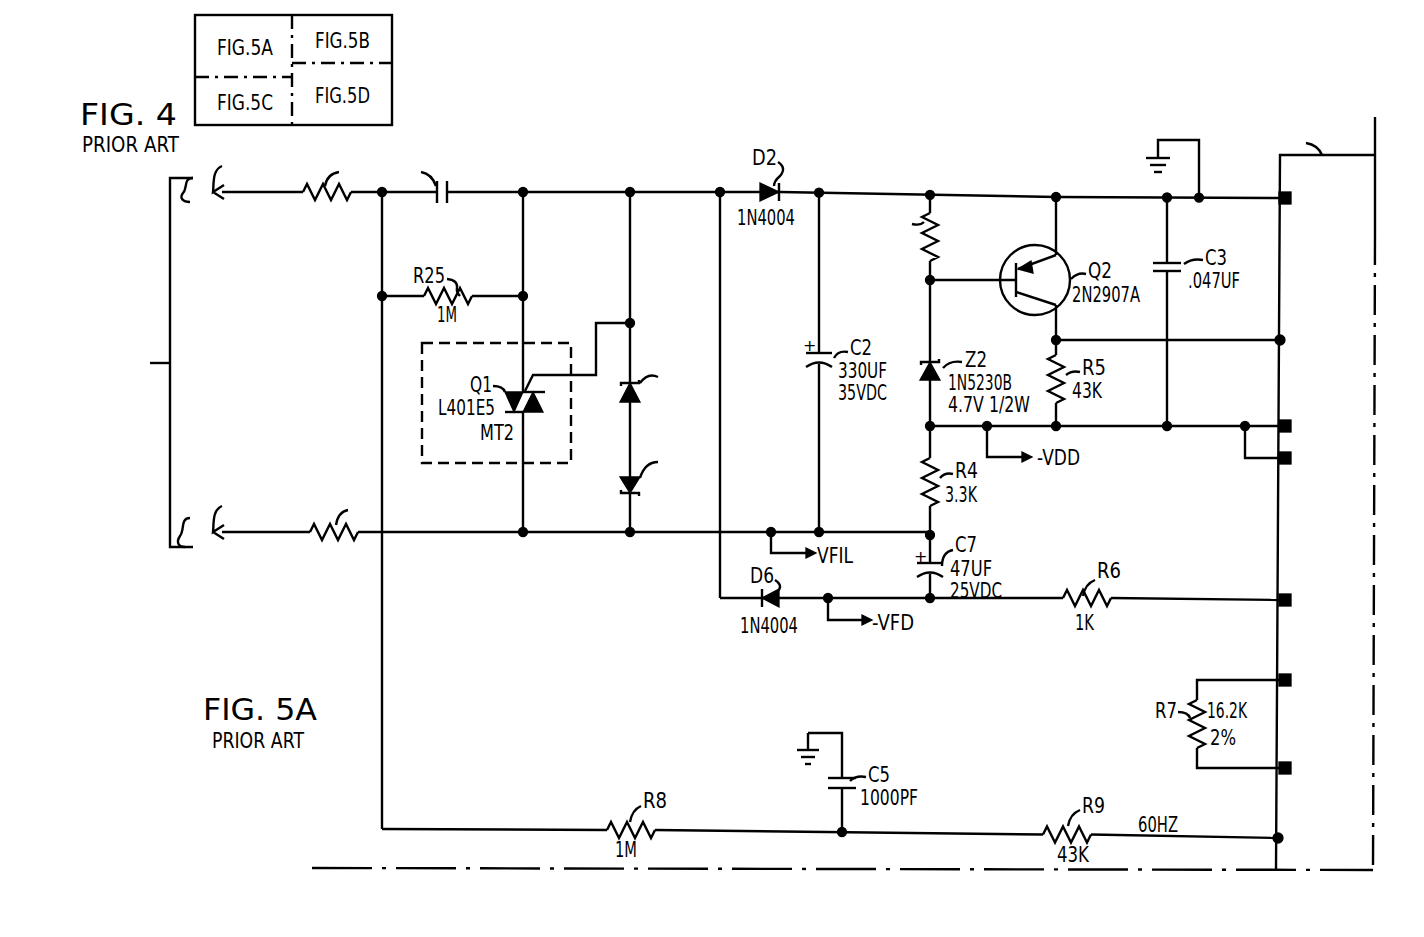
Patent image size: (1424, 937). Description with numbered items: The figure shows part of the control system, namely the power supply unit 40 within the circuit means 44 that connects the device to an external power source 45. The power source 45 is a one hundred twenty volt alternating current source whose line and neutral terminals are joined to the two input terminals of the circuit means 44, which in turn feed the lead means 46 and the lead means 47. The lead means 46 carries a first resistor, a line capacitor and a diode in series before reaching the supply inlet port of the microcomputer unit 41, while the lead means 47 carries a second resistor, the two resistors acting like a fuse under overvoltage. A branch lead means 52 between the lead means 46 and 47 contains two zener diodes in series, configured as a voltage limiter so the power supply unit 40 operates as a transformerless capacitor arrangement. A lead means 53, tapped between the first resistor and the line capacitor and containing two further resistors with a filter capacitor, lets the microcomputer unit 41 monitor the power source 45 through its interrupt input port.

The power supply unit 40 is at (632, 170).
The microcomputer unit 41 is at (1278, 512).
The circuit means 44 is at (939, 217).
The external power source 45 is at (160, 365).
The lead means 46 is at (553, 192).
The lead means 47 is at (570, 535).
The branch lead means 52 is at (630, 345).
The lead means 53 is at (382, 712).